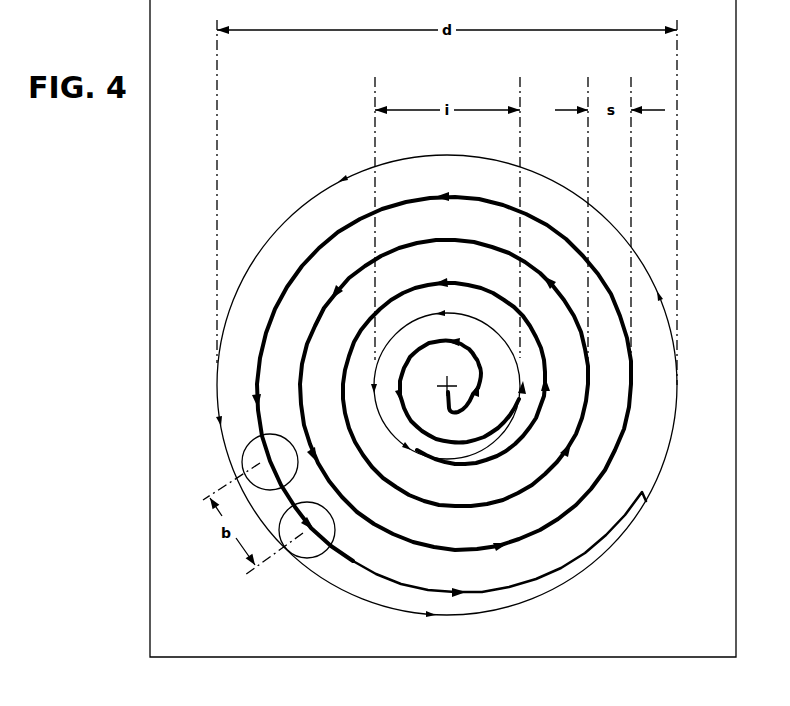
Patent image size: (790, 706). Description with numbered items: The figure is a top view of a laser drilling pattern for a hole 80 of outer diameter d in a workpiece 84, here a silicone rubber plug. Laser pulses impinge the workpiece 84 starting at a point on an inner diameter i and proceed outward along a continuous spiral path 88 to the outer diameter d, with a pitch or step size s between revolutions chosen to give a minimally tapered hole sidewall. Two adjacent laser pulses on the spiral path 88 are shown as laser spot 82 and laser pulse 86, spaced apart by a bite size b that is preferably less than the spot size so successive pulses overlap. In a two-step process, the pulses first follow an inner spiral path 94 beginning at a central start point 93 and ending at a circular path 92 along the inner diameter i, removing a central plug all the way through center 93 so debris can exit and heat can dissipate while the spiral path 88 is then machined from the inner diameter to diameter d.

The hole 80 is at (662, 468).
The laser spot 82 is at (323, 557).
The workpiece 84 is at (610, 657).
The laser pulse 86 is at (240, 463).
The spiral path 88 is at (520, 543).
The path along inner diameter 92 is at (417, 457).
The central start point 93 is at (444, 382).
The path 94 is at (446, 439).